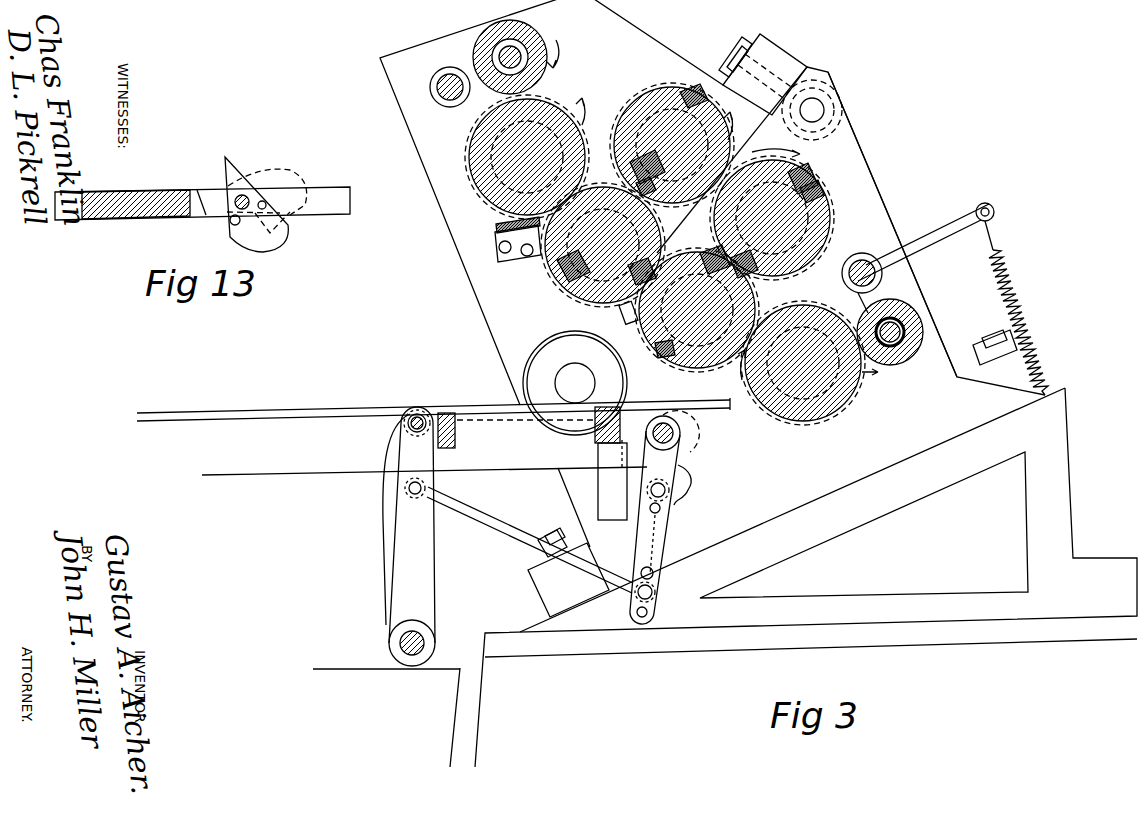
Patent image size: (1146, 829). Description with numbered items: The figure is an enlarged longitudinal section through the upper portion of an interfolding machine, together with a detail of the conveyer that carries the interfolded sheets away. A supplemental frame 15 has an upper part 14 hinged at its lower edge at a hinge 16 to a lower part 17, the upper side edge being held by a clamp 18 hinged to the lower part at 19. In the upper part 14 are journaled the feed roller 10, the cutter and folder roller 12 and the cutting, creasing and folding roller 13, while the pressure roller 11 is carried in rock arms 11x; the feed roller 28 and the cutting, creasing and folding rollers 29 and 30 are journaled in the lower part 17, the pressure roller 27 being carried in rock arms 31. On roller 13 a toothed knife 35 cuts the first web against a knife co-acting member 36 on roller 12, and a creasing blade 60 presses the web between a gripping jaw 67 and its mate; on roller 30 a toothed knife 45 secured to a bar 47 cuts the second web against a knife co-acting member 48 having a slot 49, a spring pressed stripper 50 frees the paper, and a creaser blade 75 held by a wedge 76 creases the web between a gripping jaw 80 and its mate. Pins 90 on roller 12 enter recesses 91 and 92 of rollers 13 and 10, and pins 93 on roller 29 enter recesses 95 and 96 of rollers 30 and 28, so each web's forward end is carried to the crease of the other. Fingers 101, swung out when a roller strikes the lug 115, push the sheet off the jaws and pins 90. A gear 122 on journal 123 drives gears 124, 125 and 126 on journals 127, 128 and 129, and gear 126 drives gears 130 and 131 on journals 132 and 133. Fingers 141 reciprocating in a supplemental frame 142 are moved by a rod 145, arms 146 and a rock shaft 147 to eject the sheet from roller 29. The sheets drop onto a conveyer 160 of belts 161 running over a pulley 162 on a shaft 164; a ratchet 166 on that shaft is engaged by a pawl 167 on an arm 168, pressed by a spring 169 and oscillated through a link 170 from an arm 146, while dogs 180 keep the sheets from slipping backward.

In FIG. 3, the feed roller 10 is at (565, 113).
In FIG. 3, the pressure roller 11 is at (497, 30).
In FIG. 3, the rock arms 11x is at (470, 62).
In FIG. 3, the cutter and folder roller 12 is at (556, 272).
In FIG. 3, the cutting, creasing and folding roller 13 is at (634, 108).
In FIG. 3, the upper part of supplemental frame 14 is at (637, 30).
In FIG. 3, the supplemental frame 15 is at (808, 70).
In FIG. 3, the hinge 16 is at (567, 383).
In FIG. 3, the lower part of supplemental frame 17 is at (877, 184).
In FIG. 3, the clamp 18 is at (764, 66).
In FIG. 3, the clamp hinge 19 is at (814, 110).
In FIG. 3, the pressure roller 27 is at (905, 360).
In FIG. 3, the feed roller 28 is at (807, 421).
In FIG. 3, the cutting, creasing and folding roller 29 is at (742, 390).
In FIG. 3, the cutting, creasing and folding roller 30 is at (830, 196).
In FIG. 3, the rock arms 31 is at (885, 287).
In FIG. 3, the toothed knife 35 is at (685, 215).
In FIG. 3, the knife co-acting member 36 is at (611, 180).
In FIG. 3, the toothed knife 45 is at (816, 170).
In FIG. 3, the bar 47 is at (786, 187).
In FIG. 3, the knife co-acting member 48 is at (675, 369).
In FIG. 3, the slot 49 is at (662, 353).
In FIG. 3, the spring pressed stripper 50 is at (823, 184).
In FIG. 3, the creasing blade 60 is at (700, 92).
In FIG. 3, the gripping jaw 67 is at (566, 296).
In FIG. 3, the creaser blade 75 is at (762, 263).
In FIG. 3, the wedge 76 is at (726, 247).
In FIG. 3, the gripping jaw 80 is at (703, 240).
In FIG. 3, the pins 90 is at (622, 300).
In FIG. 3, the recess 91 is at (707, 107).
In FIG. 3, the recess 92 is at (477, 164).
In FIG. 3, the pins 93 is at (775, 293).
In FIG. 3, the recess 95 is at (843, 273).
In FIG. 3, the recess 96 is at (793, 306).
In FIG. 3, the fingers 101 is at (596, 270).
In FIG. 3, the lug 115 is at (617, 322).
In FIG. 3, the gear 122 is at (550, 292).
In FIG. 3, the journal 123 is at (543, 221).
In FIG. 3, the gear 124 is at (470, 190).
In FIG. 3, the gear 125 is at (617, 110).
In FIG. 3, the gear 126 is at (597, 440).
In FIG. 3, the journal 127 is at (478, 137).
In FIG. 3, the journal 128 is at (660, 80).
In FIG. 3, the journal 129 is at (597, 323).
In FIG. 3, the gear 130 is at (857, 400).
In FIG. 3, the gear 131 is at (838, 193).
In FIG. 3, the journal 132 is at (807, 420).
In FIG. 3, the journal 133 is at (863, 250).
In FIG. 3, the fingers 141 is at (700, 407).
In FIG. 3, the supplemental frame 142 is at (489, 439).
In FIG. 3, the rod 145 is at (406, 418).
In FIG. 3, the arms 146 is at (417, 543).
In FIG. 3, the rock shaft 147 is at (397, 644).
In FIG. 13, the conveyer 160 is at (126, 198).
In FIG. 3, the conveyer 160 is at (201, 415).
In FIG. 3, the belts 161 is at (274, 408).
In FIG. 3, the pulley 162 is at (690, 445).
In FIG. 3, the shaft 164 is at (680, 448).
In FIG. 3, the ratchet 166 is at (700, 430).
In FIG. 3, the pawl 167 is at (687, 481).
In FIG. 3, the arm 168 is at (643, 543).
In FIG. 3, the spring 169 is at (674, 503).
In FIG. 3, the link 170 is at (478, 516).
In FIG. 13, the dogs 180 is at (288, 233).